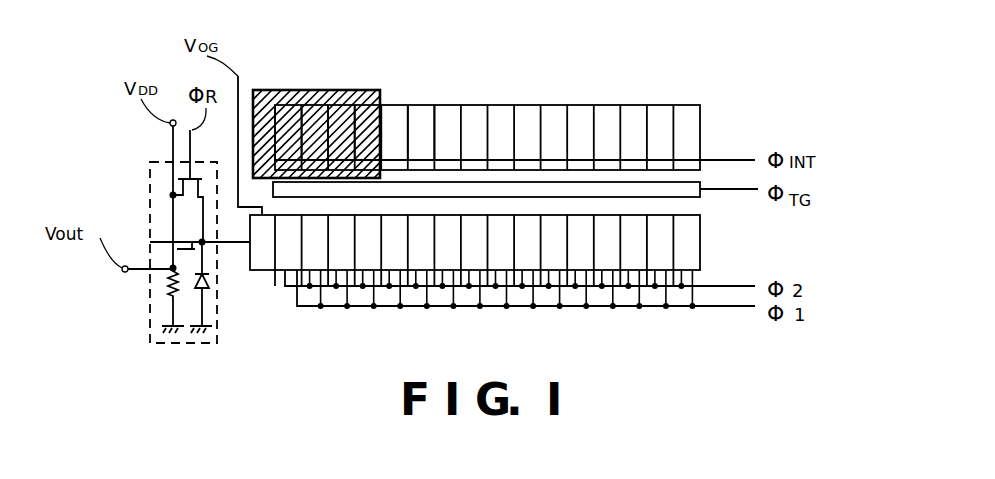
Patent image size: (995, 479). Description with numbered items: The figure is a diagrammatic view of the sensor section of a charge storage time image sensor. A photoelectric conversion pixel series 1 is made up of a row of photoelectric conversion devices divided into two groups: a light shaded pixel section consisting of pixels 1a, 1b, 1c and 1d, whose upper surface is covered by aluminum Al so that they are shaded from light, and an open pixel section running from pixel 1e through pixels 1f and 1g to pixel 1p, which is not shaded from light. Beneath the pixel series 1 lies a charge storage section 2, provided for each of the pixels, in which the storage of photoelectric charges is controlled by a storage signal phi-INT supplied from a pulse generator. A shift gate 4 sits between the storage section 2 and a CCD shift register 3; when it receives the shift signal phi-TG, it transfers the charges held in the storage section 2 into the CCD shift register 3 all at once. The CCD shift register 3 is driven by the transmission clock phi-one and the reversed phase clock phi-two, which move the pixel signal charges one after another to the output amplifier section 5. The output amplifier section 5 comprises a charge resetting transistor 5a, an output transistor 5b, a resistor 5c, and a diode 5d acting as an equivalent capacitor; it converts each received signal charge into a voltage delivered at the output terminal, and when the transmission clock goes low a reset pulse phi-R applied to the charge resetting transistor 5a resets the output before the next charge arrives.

The photoelectric conversion pixel series 1 is at (505, 105).
The light shaded pixel 1a is at (290, 105).
The light shaded pixel 1b is at (317, 105).
The light shaded pixel 1c is at (343, 105).
The light shaded pixel 1d is at (367, 105).
The open pixel 1e is at (397, 105).
The open pixel 1f is at (423, 105).
The open pixel 1g is at (450, 105).
The open pixel 1p is at (687, 105).
The charge storage section 2 is at (693, 158).
The CCD shift register 3 is at (702, 245).
The shift gate 4 is at (700, 196).
The output amplifier section 5 is at (148, 323).
The charge resetting transistor 5a is at (180, 179).
The output transistor 5b is at (170, 242).
The resistor 5c is at (168, 288).
The diode 5d is at (208, 283).
The light-shielded region A is at (270, 90).